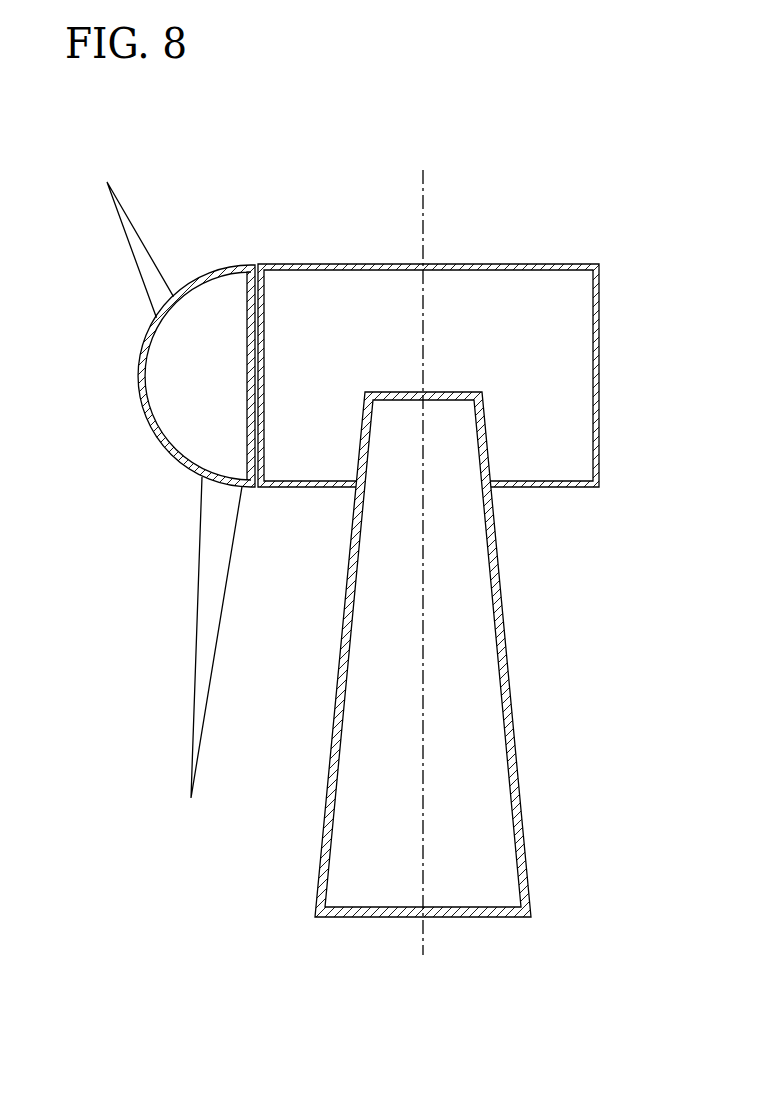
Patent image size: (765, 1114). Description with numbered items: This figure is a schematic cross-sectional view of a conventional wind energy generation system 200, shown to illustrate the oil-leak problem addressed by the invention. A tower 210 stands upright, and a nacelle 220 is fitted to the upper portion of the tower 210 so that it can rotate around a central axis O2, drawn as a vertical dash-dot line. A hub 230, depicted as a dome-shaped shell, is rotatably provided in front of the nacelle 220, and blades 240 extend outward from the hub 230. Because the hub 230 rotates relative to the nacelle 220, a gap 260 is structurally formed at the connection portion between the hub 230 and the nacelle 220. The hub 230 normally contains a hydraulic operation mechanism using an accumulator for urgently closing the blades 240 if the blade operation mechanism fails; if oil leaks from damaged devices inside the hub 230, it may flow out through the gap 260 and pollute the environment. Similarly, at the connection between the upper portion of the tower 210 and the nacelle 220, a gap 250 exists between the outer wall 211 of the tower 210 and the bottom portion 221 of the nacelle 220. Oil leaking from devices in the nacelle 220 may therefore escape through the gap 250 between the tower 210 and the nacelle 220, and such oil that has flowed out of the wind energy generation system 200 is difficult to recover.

The conventional wind energy generation system 200 is at (565, 223).
The tower 210 is at (517, 760).
The outer wall of the tower 211 is at (508, 662).
The nacelle 220 is at (470, 264).
The bottom portion of the nacelle 221 is at (553, 480).
The hub 230 is at (212, 267).
The spikes / blades 240 is at (117, 213).
The gap 250 is at (504, 491).
The gap 260 is at (258, 489).
The central axis O2 is at (423, 215).